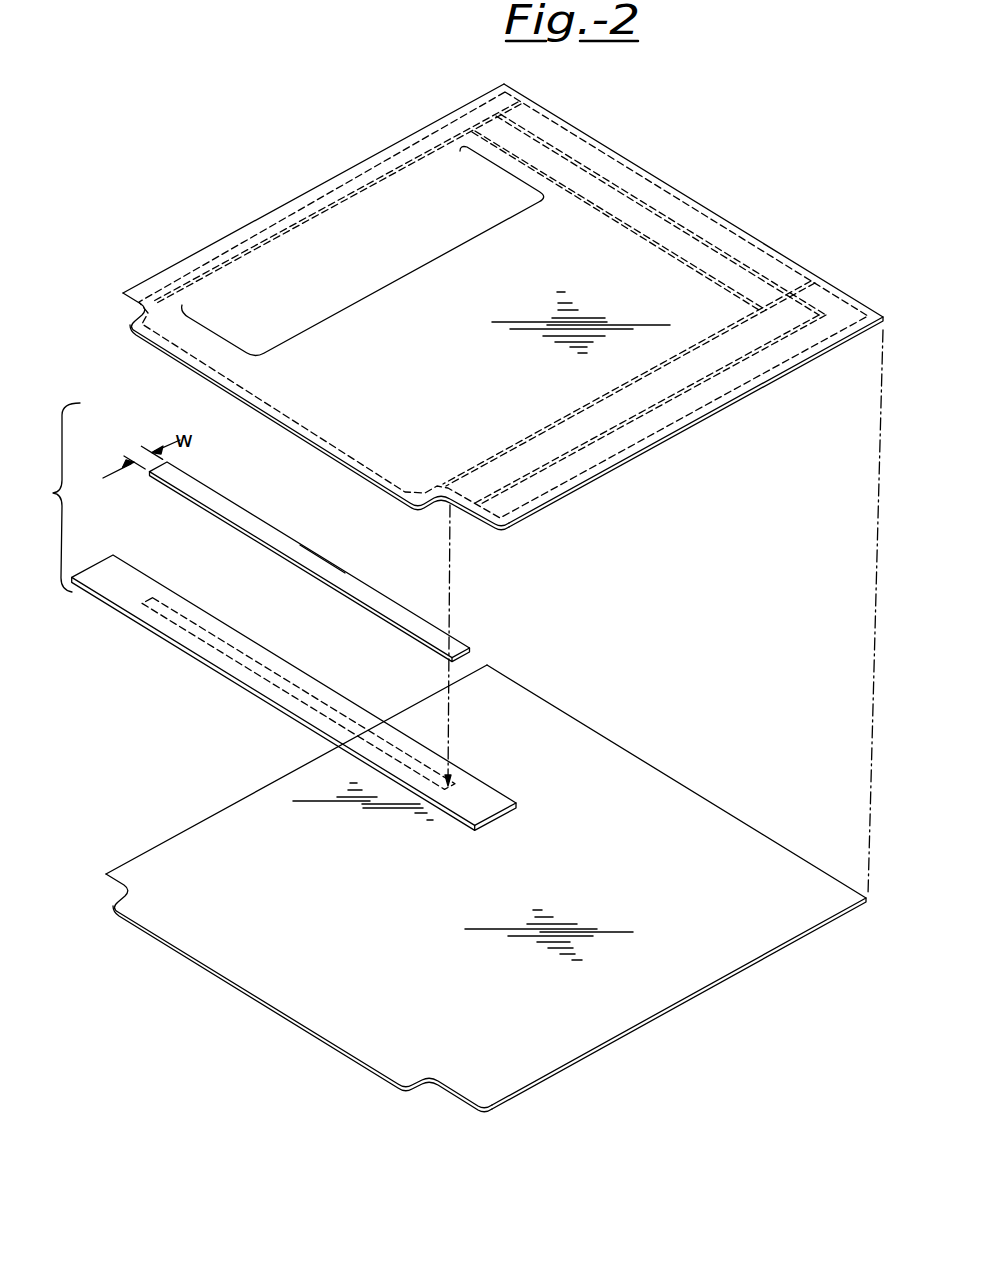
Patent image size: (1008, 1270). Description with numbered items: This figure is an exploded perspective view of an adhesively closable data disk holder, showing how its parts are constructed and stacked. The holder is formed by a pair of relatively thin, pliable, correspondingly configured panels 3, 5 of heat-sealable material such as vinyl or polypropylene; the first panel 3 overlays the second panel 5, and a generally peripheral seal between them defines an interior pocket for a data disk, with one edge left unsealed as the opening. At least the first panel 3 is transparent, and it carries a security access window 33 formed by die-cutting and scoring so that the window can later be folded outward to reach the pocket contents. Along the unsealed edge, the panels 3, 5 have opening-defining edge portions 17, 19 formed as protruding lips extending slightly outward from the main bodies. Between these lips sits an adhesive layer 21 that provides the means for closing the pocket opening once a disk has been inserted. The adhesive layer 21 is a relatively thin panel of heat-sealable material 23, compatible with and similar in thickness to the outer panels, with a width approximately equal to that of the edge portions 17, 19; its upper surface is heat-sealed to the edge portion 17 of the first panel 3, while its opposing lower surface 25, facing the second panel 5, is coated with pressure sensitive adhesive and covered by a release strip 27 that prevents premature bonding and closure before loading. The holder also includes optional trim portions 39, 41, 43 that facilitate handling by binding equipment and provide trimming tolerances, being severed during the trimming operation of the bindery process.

The first panel 3 is at (705, 300).
The second panel 5 is at (587, 1055).
The opening-defining edge portion 17 is at (223, 392).
The opening-defining edge portion 19 is at (233, 968).
The adhesive layer 21 is at (53, 493).
The panel of heat-sealable material 23 is at (190, 507).
The lower surface 25 is at (322, 594).
The release strip 27 is at (490, 796).
The security access window 33 is at (363, 305).
The trim portion 39 is at (327, 193).
The trim portion 41 is at (577, 178).
The trim portion 43 is at (672, 383).